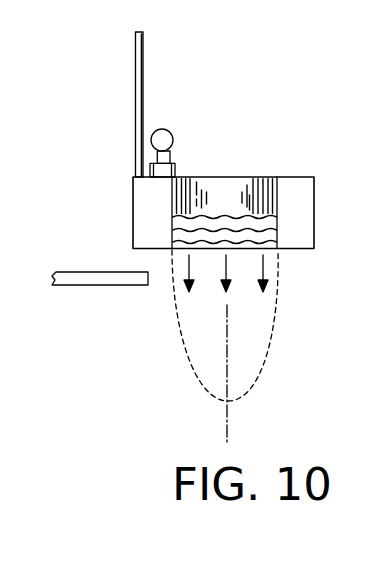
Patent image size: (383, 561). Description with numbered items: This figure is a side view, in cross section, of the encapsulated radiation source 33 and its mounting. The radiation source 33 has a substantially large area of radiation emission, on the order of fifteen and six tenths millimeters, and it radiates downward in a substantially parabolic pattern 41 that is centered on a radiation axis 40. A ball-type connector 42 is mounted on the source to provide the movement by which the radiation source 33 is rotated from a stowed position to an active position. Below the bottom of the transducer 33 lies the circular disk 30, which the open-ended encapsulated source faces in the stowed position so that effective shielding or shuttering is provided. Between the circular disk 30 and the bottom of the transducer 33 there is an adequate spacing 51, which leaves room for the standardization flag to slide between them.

The circular disk 30 is at (112, 286).
The encapsulated radiation source 33 is at (253, 177).
The radiation axis 40 is at (228, 437).
The parabolic pattern 41 is at (193, 365).
The ball-type connector 42 is at (162, 129).
The spacing 51 is at (128, 261).